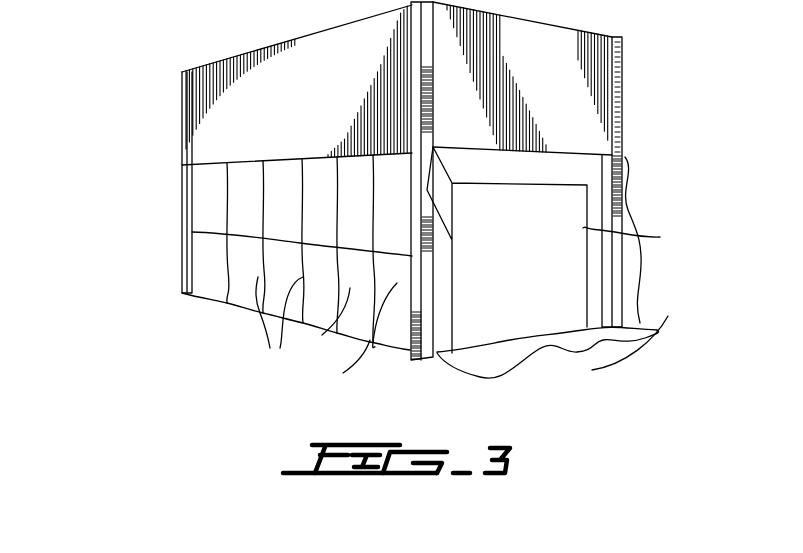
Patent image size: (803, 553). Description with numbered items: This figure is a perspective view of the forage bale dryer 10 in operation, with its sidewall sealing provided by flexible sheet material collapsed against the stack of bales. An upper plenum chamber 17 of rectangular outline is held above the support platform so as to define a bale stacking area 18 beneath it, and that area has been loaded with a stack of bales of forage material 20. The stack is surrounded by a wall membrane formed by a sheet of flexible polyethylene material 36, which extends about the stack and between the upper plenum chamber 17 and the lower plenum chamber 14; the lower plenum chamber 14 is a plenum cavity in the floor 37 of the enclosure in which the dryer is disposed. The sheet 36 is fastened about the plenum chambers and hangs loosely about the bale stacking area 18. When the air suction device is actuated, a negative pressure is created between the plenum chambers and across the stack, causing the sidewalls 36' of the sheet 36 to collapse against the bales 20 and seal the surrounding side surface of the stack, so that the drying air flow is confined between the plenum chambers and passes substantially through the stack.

The forage bale dryer 10 is at (153, 135).
The lower plenum chamber 14 is at (507, 348).
The upper plenum chamber 17 is at (562, 98).
The bale stacking area 18 is at (495, 232).
The bales of forage material 20 is at (337, 322).
The sheet of flexible polyethylene material 36 is at (406, 249).
The sidewalls of the polyethylene sheet material 36' is at (502, 309).
The floor 37 is at (644, 329).